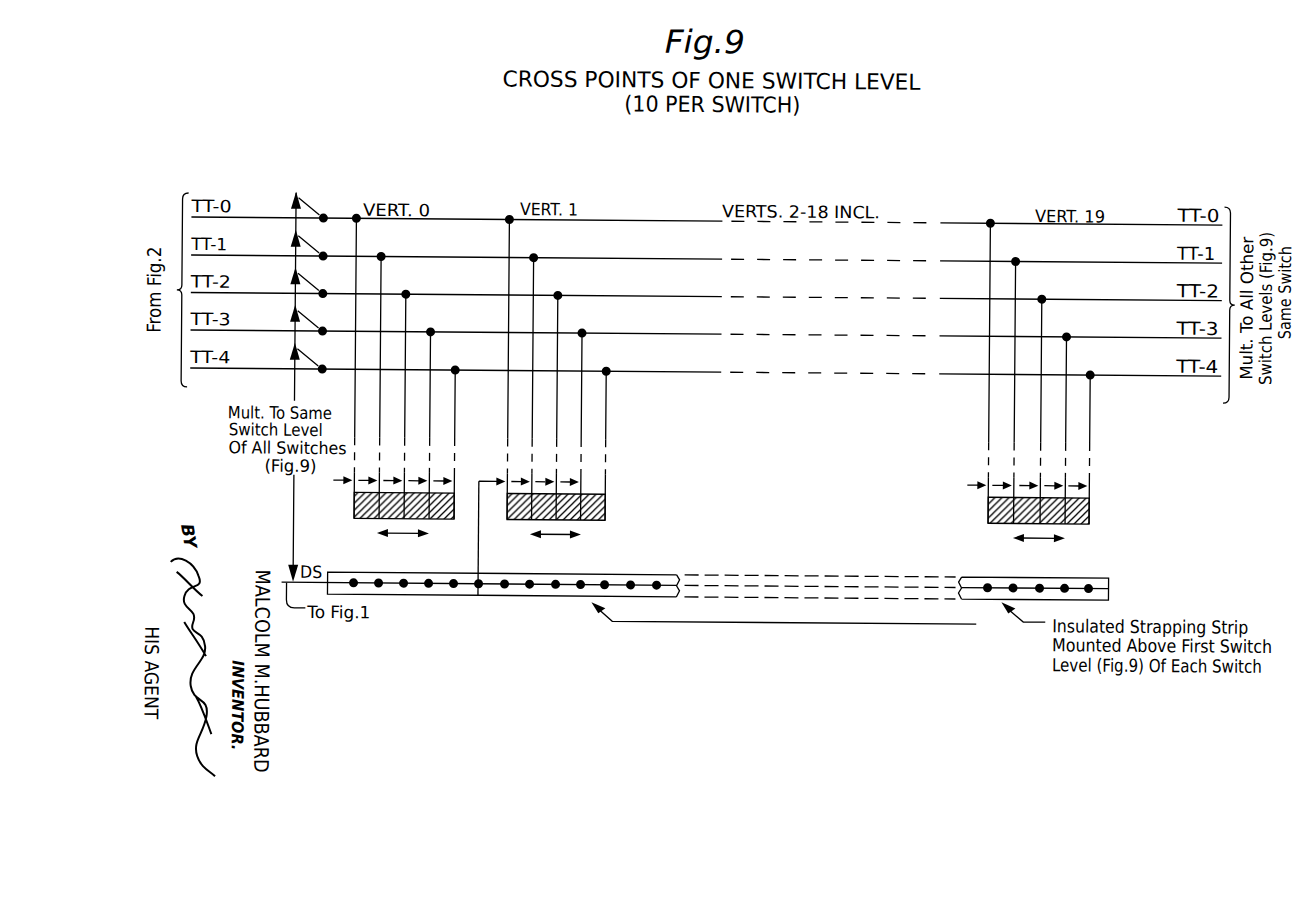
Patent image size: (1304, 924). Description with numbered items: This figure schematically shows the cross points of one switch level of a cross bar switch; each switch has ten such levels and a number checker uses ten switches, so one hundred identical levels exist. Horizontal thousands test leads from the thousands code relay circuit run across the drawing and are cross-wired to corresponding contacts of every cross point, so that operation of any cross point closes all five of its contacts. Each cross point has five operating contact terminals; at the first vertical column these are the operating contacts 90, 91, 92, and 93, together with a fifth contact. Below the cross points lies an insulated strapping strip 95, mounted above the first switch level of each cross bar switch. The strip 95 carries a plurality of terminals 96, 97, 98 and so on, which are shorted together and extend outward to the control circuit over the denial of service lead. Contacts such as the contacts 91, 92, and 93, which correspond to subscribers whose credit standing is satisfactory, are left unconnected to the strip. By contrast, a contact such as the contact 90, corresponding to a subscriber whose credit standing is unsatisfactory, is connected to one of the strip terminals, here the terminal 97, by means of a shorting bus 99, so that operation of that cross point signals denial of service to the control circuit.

The operating contact 90 is at (490, 482).
The operating contact 91 is at (511, 482).
The operating contact 92 is at (537, 482).
The operating contact 93 is at (556, 494).
The insulated strapping strip 95 is at (653, 574).
The terminal 96 is at (405, 590).
The terminal 97 is at (480, 597).
The terminal 98 is at (606, 590).
The shorting bus 99 is at (478, 528).